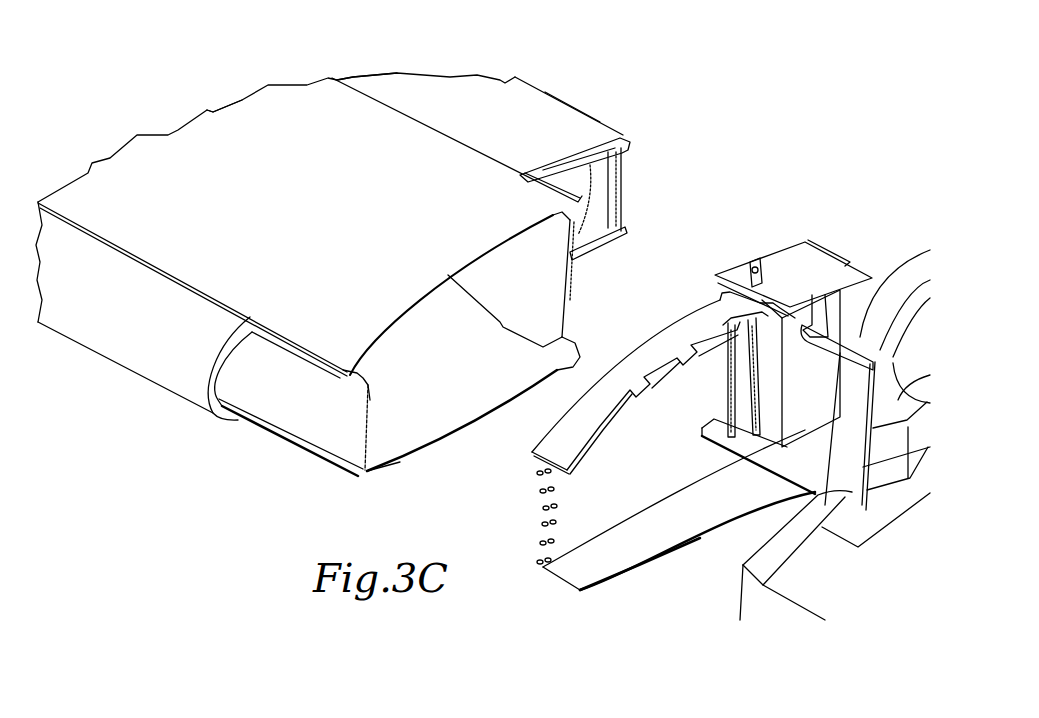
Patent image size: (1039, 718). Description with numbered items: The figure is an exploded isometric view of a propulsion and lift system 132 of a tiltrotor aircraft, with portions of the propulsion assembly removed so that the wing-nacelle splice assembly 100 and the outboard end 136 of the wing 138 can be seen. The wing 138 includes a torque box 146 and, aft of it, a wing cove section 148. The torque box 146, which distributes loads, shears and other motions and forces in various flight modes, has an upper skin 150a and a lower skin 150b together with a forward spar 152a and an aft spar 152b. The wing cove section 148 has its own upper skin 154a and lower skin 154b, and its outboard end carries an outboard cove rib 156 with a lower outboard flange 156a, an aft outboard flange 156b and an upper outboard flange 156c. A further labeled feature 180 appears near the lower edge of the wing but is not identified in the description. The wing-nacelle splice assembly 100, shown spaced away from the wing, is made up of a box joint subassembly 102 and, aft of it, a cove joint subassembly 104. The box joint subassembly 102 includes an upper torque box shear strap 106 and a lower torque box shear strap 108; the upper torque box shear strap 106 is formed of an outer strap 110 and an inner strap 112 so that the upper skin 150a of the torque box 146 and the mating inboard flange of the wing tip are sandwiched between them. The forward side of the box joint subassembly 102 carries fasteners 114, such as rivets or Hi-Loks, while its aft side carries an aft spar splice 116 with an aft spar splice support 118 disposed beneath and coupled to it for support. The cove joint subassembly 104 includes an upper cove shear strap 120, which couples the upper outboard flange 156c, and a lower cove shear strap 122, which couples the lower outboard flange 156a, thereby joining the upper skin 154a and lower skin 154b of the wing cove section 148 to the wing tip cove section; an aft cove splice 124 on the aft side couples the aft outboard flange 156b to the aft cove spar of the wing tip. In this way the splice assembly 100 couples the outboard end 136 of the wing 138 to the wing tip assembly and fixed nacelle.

The wing-nacelle splice assembly 100 is at (793, 246).
The box joint subassembly 102 is at (559, 585).
The cove joint subassembly 104 is at (782, 245).
The upper torque box shear strap 106 is at (530, 453).
The lower torque box shear strap 108 is at (600, 590).
The outer strap 110 is at (698, 322).
The inner strap 112 is at (573, 469).
The fasteners 114 is at (538, 508).
The aft spar splice 116 is at (727, 377).
The aft spar splice support 118 is at (718, 448).
The upper cove shear strap 120 is at (750, 262).
The lower cove shear strap 122 is at (828, 398).
The aft cove splice 124 is at (827, 303).
The propulsion and lift system 132 is at (299, 508).
The outboard end 136 is at (373, 340).
The wing 138 is at (243, 105).
The torque box 146 is at (357, 88).
The wing cove section 148 is at (503, 80).
The upper skin 150a is at (180, 133).
The lower skin 150b is at (437, 369).
The forward spar 152a is at (288, 415).
The aft spar 152b is at (545, 277).
The upper skin 154a is at (548, 95).
The lower skin 154b is at (580, 230).
The outboard cove rib 156 is at (599, 167).
The lower outboard flange 156a is at (590, 252).
The aft outboard flange 156b is at (625, 180).
The upper outboard flange 156c is at (560, 170).
The lower edge 180 is at (367, 430).